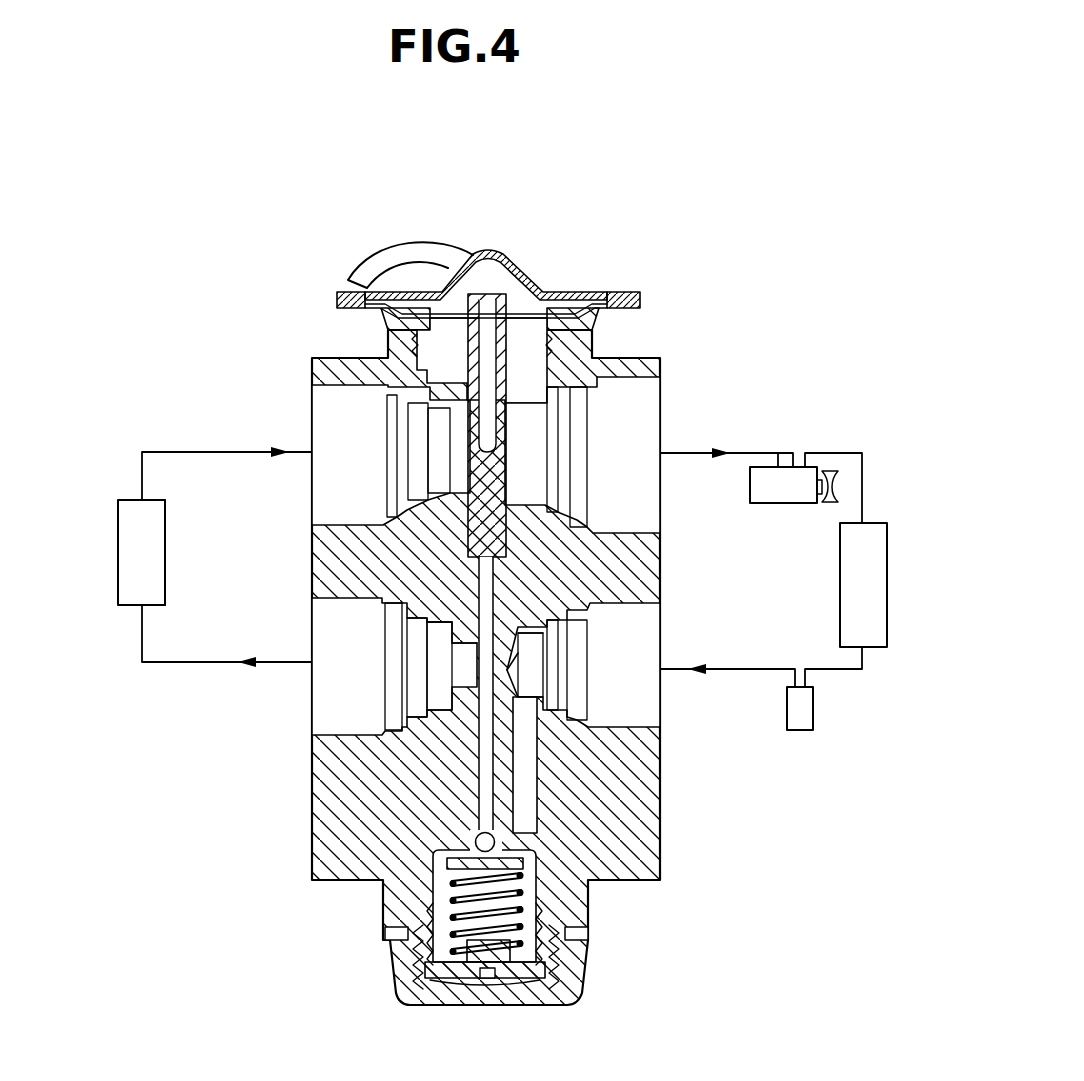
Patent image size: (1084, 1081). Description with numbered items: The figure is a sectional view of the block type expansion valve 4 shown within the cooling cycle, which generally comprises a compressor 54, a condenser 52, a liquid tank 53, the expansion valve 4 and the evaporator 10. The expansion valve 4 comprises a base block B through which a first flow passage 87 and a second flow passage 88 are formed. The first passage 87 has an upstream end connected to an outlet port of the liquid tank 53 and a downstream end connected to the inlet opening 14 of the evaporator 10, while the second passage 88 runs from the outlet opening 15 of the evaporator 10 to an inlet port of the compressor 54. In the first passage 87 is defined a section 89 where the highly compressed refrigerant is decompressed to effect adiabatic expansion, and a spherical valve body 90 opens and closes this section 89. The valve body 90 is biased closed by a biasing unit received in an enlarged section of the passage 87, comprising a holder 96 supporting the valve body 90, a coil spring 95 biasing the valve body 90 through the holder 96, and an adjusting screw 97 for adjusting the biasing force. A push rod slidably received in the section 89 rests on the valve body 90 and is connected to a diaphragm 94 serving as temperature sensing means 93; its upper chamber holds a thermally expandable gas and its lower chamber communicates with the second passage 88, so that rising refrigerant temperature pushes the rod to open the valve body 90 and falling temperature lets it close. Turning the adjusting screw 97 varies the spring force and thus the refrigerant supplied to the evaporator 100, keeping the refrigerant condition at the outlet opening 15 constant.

The evaporator 100 is at (245, 330).
The expansion valve 4 is at (666, 332).
The evaporator 10 is at (118, 528).
The inlet opening 14 is at (143, 606).
The outlet opening 15 is at (141, 500).
The condenser 52 is at (887, 568).
The liquid tank 53 is at (797, 733).
The compressor 54 is at (777, 465).
The second flow passage 88 is at (632, 382).
The section 89 is at (480, 703).
The spherical valve body 90 is at (510, 866).
The base block B is at (497, 835).
The temperature sensing means 93 is at (483, 420).
The diaphragm 94 is at (571, 293).
The holder 96 is at (550, 845).
The first flow passage 87 is at (443, 900).
The coil spring 95 is at (443, 930).
The adjusting screw 97 is at (532, 980).